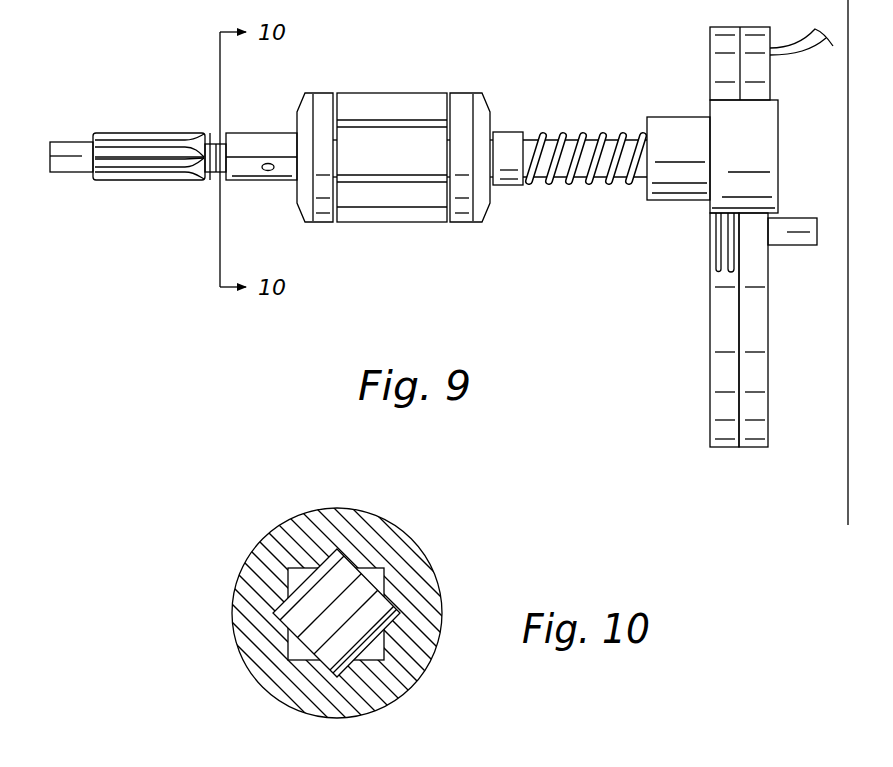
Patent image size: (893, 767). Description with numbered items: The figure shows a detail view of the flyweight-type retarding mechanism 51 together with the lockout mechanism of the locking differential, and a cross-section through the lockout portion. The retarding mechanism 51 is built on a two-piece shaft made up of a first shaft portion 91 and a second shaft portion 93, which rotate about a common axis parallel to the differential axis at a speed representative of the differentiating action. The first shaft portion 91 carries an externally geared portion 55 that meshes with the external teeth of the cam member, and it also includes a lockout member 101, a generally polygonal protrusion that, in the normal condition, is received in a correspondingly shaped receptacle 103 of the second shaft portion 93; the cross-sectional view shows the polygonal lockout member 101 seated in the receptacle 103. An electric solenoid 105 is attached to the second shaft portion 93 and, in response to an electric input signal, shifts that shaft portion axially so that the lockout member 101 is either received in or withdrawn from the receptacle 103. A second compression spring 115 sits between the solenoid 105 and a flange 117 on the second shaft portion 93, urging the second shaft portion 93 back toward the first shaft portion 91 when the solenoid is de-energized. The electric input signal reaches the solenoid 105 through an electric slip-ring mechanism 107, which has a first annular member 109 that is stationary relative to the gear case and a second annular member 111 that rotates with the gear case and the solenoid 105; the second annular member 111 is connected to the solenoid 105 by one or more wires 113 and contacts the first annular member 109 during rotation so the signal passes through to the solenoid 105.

In FIG. 9, the retarding mechanism 51 is at (381, 240).
In FIG. 9, the externally geared portion 55 is at (137, 177).
In FIG. 9, the first shaft portion 91 is at (73, 142).
In FIG. 9, the second shaft portion 93 is at (262, 142).
In FIG. 10, the second shaft portion 93 is at (256, 573).
In FIG. 9, the lockout member 101 is at (211, 136).
In FIG. 10, the lockout member 101 is at (331, 615).
In FIG. 10, the receptacle 103 is at (384, 578).
In FIG. 9, the electric solenoid 105 is at (776, 166).
In FIG. 9, the electric slip-ring mechanism 107 is at (750, 461).
In FIG. 9, the first annular member 109 is at (763, 370).
In FIG. 9, the second annular member 111 is at (722, 373).
In FIG. 9, the wires 113 is at (720, 256).
In FIG. 9, the second compression spring 115 is at (568, 186).
In FIG. 9, the flange 117 is at (515, 131).